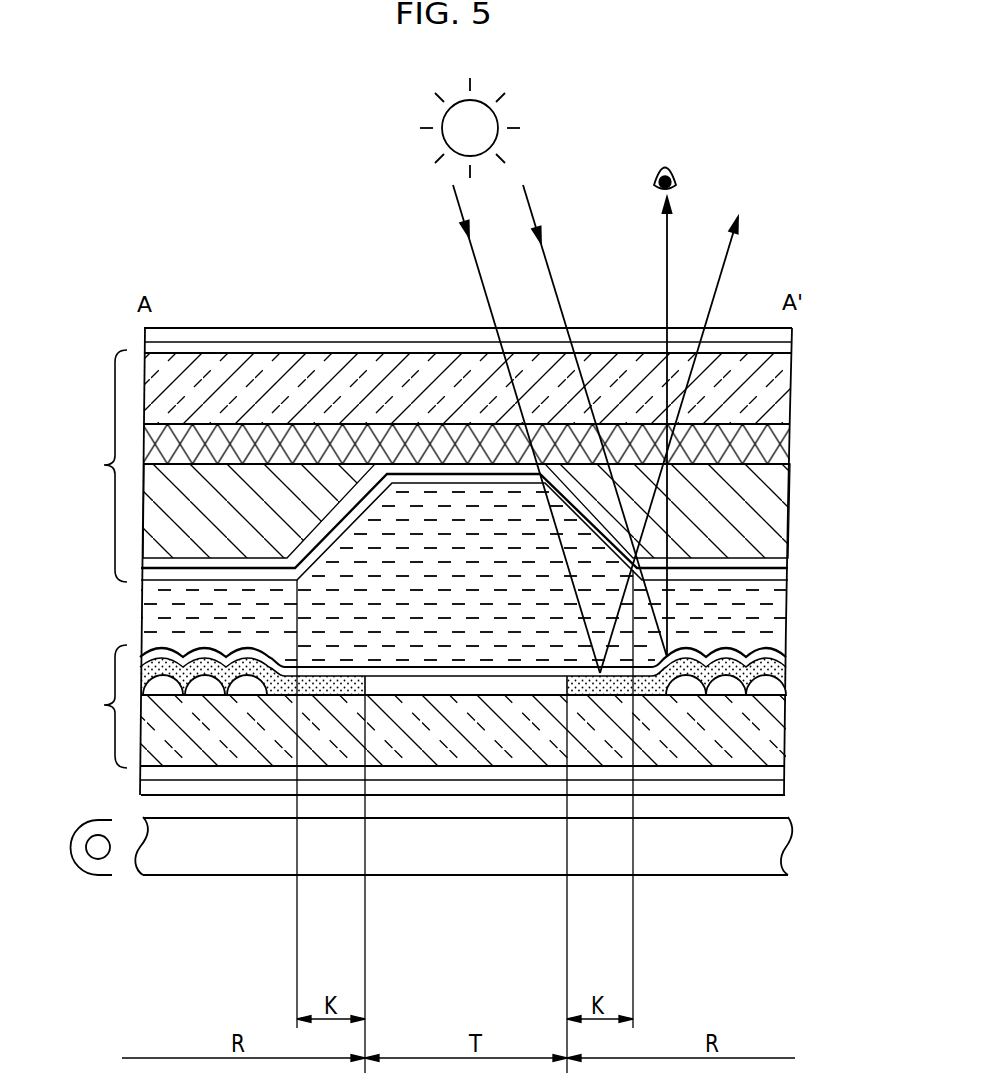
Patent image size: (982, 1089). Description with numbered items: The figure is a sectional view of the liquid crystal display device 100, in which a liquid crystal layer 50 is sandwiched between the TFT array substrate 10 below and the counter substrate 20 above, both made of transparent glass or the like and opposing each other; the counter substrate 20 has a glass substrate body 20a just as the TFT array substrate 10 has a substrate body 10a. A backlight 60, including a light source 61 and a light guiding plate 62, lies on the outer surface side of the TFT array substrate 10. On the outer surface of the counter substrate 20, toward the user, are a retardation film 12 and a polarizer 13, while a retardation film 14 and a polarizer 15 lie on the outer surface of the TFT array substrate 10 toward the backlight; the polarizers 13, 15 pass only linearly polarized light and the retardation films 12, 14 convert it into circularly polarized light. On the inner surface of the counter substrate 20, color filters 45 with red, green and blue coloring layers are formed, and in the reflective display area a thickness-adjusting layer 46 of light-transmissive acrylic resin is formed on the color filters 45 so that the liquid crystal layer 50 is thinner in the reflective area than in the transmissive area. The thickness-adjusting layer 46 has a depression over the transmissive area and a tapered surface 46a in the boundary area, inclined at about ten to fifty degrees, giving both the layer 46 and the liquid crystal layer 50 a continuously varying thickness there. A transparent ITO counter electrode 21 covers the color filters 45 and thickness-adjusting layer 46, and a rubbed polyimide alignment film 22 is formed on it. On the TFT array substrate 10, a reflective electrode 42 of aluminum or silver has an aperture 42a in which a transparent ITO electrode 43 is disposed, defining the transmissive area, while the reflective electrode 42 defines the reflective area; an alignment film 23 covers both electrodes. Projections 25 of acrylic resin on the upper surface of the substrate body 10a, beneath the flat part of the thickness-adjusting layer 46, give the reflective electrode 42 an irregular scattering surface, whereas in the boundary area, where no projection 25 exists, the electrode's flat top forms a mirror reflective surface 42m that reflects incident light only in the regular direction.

The liquid crystal display device 100 is at (306, 180).
The TFT array substrate 10 is at (430, 720).
The substrate body 10a is at (770, 748).
The retardation film 12 is at (786, 348).
The polarizer 13 is at (784, 335).
The retardation film 14 is at (786, 776).
The polarizer 15 is at (786, 793).
The counter substrate 20 is at (431, 466).
The upper glass substrate 20a is at (770, 412).
The counter electrode 21 is at (786, 568).
The alignment film 22 is at (786, 580).
The alignment film 23 is at (786, 660).
The projections 25 is at (786, 697).
The reflective electrode 42 is at (786, 683).
The aperture 42a is at (368, 679).
The mirror reflective surface 42m is at (622, 673).
The transparent electrode 43 is at (495, 688).
The color filters 45 is at (782, 447).
The thickness-adjusting layer 46 is at (778, 512).
The tapered surface 46a is at (357, 527).
The liquid crystal layer 50 is at (140, 601).
The backlight 60 is at (92, 800).
The light source 61 is at (93, 873).
The light guiding plate 62 is at (775, 845).